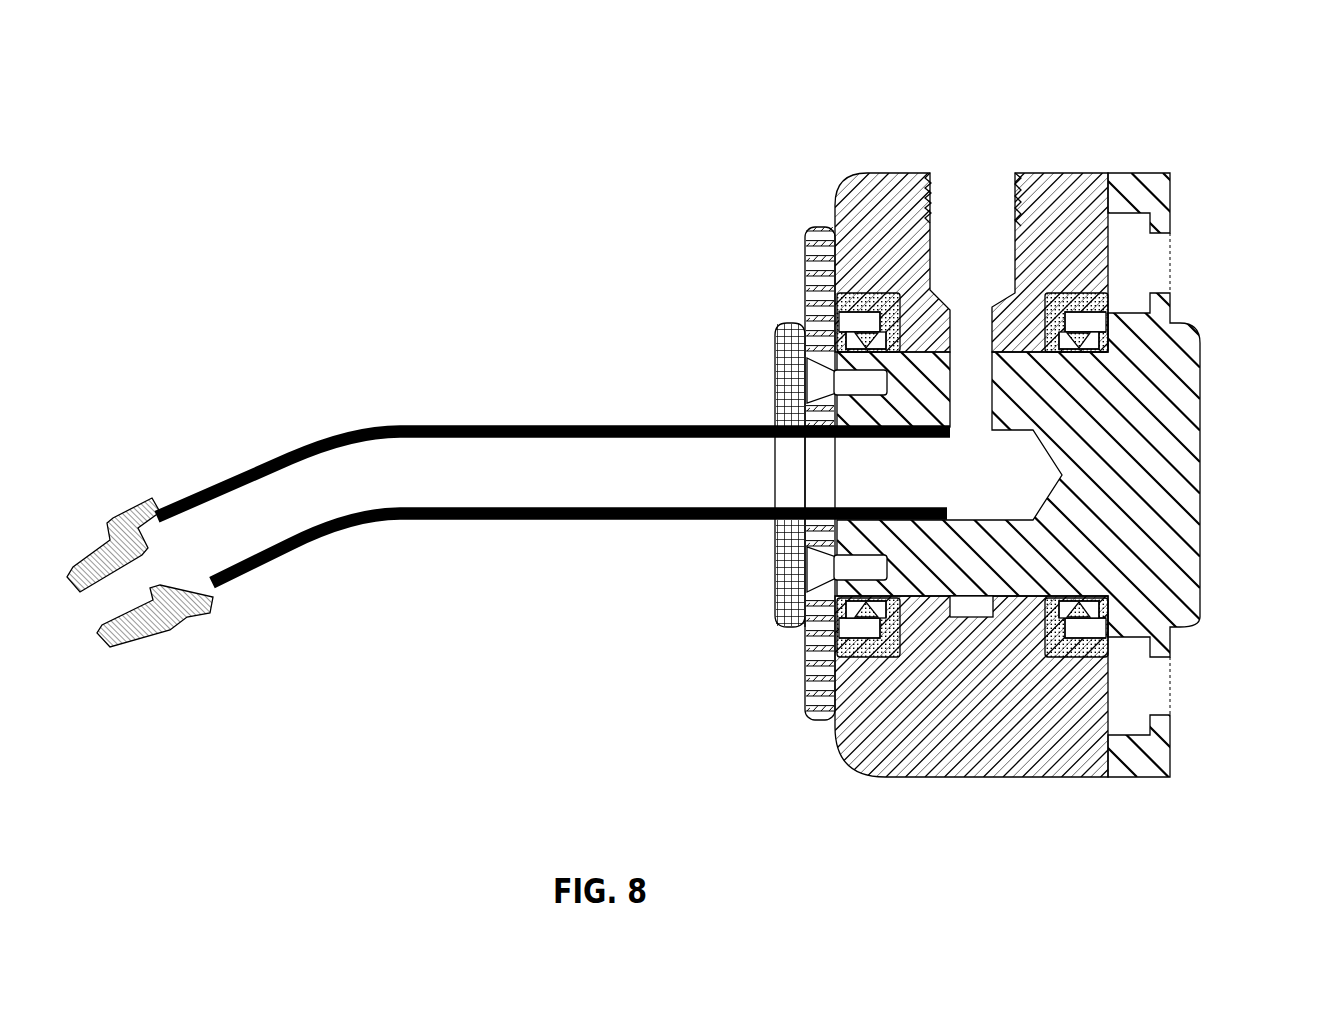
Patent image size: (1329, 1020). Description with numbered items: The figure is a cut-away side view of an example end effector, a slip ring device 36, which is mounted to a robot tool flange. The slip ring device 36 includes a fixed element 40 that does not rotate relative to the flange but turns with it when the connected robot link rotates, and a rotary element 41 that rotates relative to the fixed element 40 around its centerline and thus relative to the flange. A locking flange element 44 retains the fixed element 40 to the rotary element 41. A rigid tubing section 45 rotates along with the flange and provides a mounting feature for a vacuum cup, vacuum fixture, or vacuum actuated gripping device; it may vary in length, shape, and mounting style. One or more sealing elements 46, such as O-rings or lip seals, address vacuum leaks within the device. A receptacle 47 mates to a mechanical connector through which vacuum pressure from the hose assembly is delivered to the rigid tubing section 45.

The slip ring device 36 is at (924, 437).
The fixed element 40 is at (1153, 177).
The rotary element 41 is at (897, 778).
The locking flange element 44 is at (813, 230).
The rigid tubing section 45 is at (551, 521).
The sealing element 46 is at (1108, 660).
The receptacle 47 is at (952, 183).